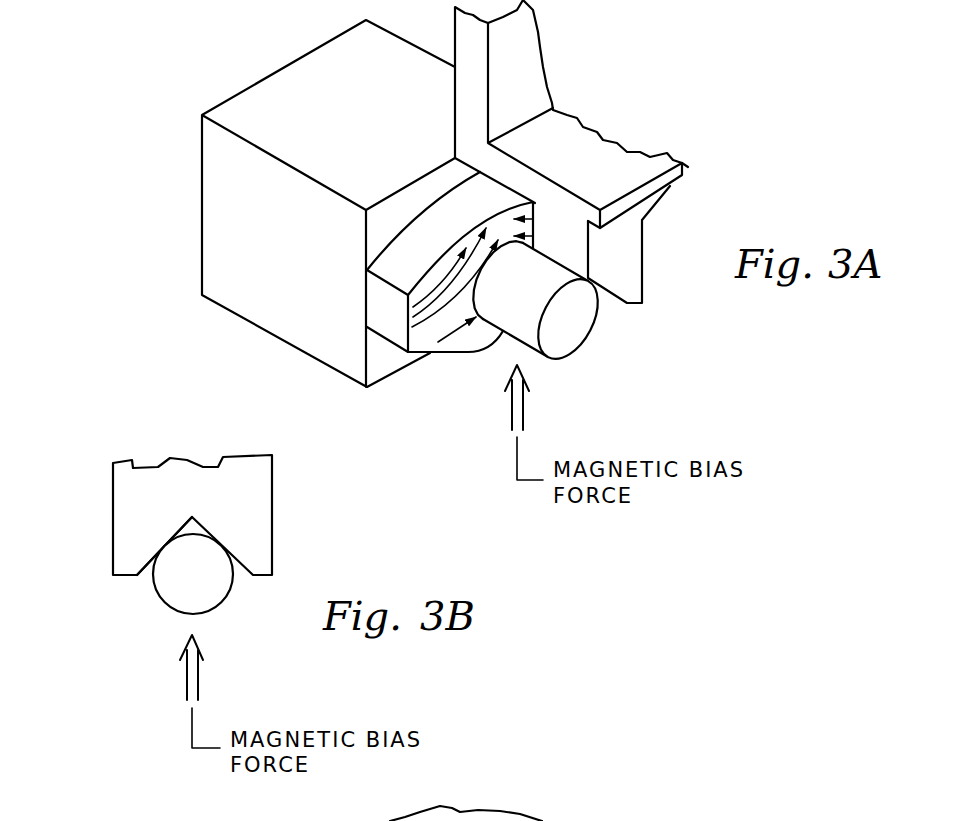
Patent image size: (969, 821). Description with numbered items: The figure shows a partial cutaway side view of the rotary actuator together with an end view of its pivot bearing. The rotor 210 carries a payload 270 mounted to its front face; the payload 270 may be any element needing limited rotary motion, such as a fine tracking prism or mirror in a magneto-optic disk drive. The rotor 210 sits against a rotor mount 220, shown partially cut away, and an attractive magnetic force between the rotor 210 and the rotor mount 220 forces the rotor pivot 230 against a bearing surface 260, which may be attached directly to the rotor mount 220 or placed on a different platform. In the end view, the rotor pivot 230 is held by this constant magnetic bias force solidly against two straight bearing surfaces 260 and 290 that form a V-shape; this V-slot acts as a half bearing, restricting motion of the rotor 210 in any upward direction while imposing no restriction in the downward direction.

In FIG. 3A, the rotor 210 is at (444, 324).
In FIG. 3A, the rotor mount 220 is at (648, 238).
In FIG. 3A, the rotor pivot 230 is at (568, 329).
In FIG. 3B, the rotor pivot 230 is at (188, 583).
In FIG. 3A, the bearing surface 260 is at (613, 305).
In FIG. 3B, the bearing surface 260 is at (227, 539).
In FIG. 3A, the payload 270 is at (323, 316).
In FIG. 3B, the bearing surface 290 is at (156, 542).